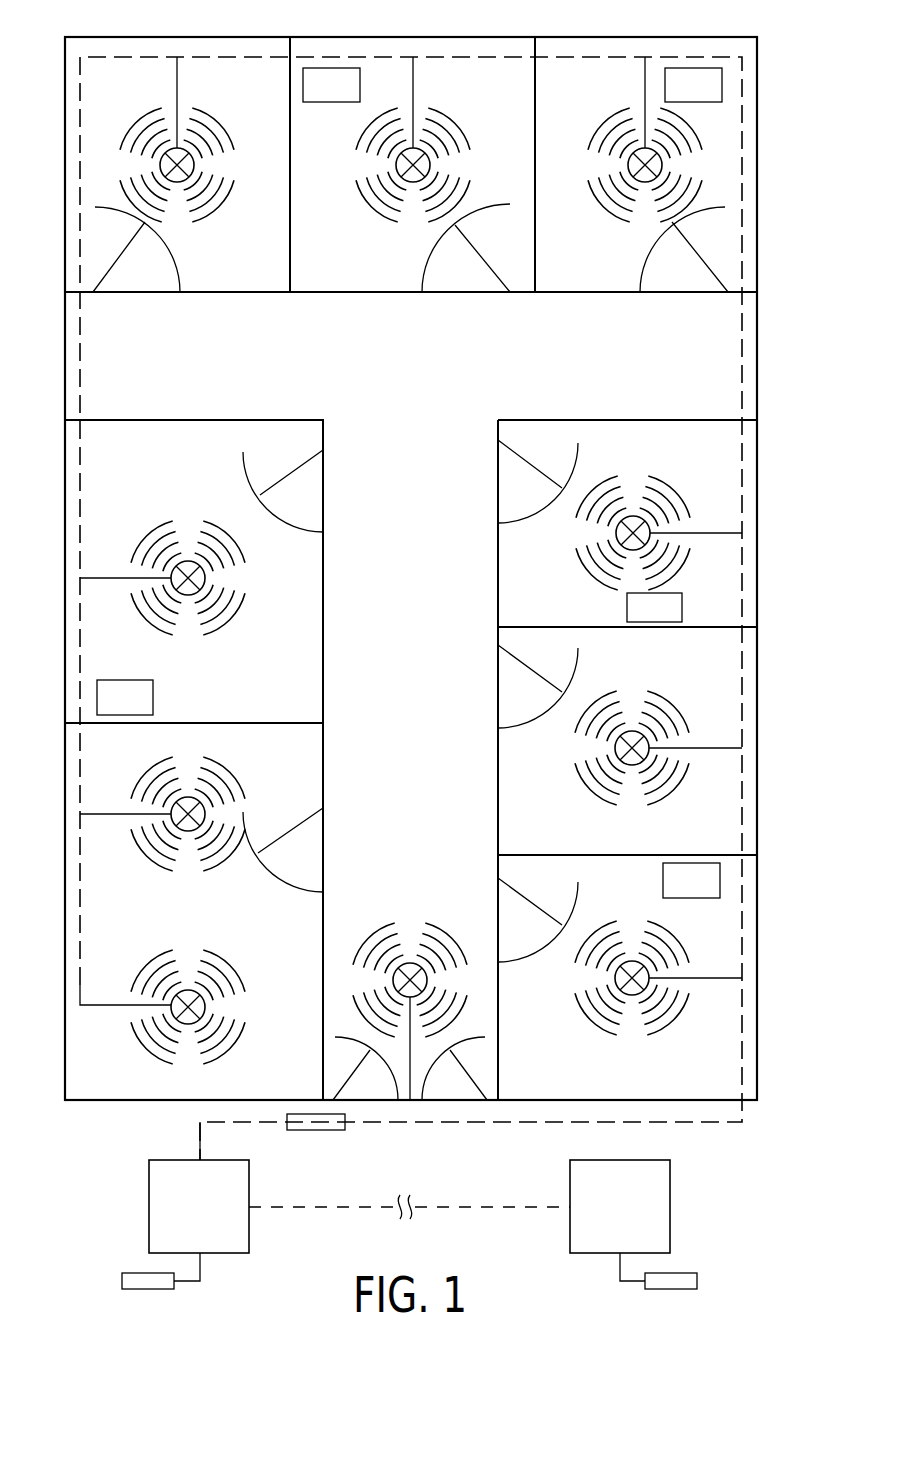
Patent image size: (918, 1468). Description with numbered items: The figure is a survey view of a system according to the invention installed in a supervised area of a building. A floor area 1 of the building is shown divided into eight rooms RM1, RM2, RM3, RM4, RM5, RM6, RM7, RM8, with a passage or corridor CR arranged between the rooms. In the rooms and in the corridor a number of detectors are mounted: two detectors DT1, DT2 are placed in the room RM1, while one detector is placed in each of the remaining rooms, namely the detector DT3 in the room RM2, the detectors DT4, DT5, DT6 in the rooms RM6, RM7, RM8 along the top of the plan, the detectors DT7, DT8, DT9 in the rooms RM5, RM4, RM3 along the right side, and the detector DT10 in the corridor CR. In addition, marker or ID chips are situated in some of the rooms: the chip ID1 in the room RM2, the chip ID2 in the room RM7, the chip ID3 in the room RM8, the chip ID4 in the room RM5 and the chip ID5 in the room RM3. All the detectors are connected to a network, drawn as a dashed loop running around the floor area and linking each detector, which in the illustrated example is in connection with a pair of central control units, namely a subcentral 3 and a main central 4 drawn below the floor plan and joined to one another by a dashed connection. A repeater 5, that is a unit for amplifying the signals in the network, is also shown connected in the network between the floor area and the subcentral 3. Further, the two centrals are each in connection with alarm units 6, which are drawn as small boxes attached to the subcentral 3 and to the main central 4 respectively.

The floor area 1 is at (766, 657).
The subcentral 3 is at (149, 1200).
The main central 4 is at (670, 1200).
The repeater 5 is at (310, 1130).
The alarm units 6 is at (122, 1281).
The detector DT1 is at (188, 990).
The detector DT2 is at (188, 797).
The detector DT3 is at (188, 561).
The detector DT4 is at (194, 165).
The detector DT5 is at (430, 165).
The detector DT6 is at (662, 165).
The detector DT7 is at (633, 516).
The detector DT8 is at (632, 731).
The detector DT9 is at (632, 961).
The detector DT10 is at (410, 963).
The ID chip ID1 is at (125, 697).
The ID chip ID2 is at (331, 85).
The ID chip ID3 is at (693, 85).
The ID chip ID4 is at (654, 607).
The ID chip ID5 is at (691, 880).
The room RM1 is at (299, 1087).
The room RM2 is at (301, 710).
The room RM3 is at (561, 1087).
The room RM4 is at (561, 843).
The room RM5 is at (561, 622).
The room RM6 is at (256, 285).
The room RM7 is at (361, 285).
The room RM8 is at (601, 285).
The corridor CR is at (416, 600).